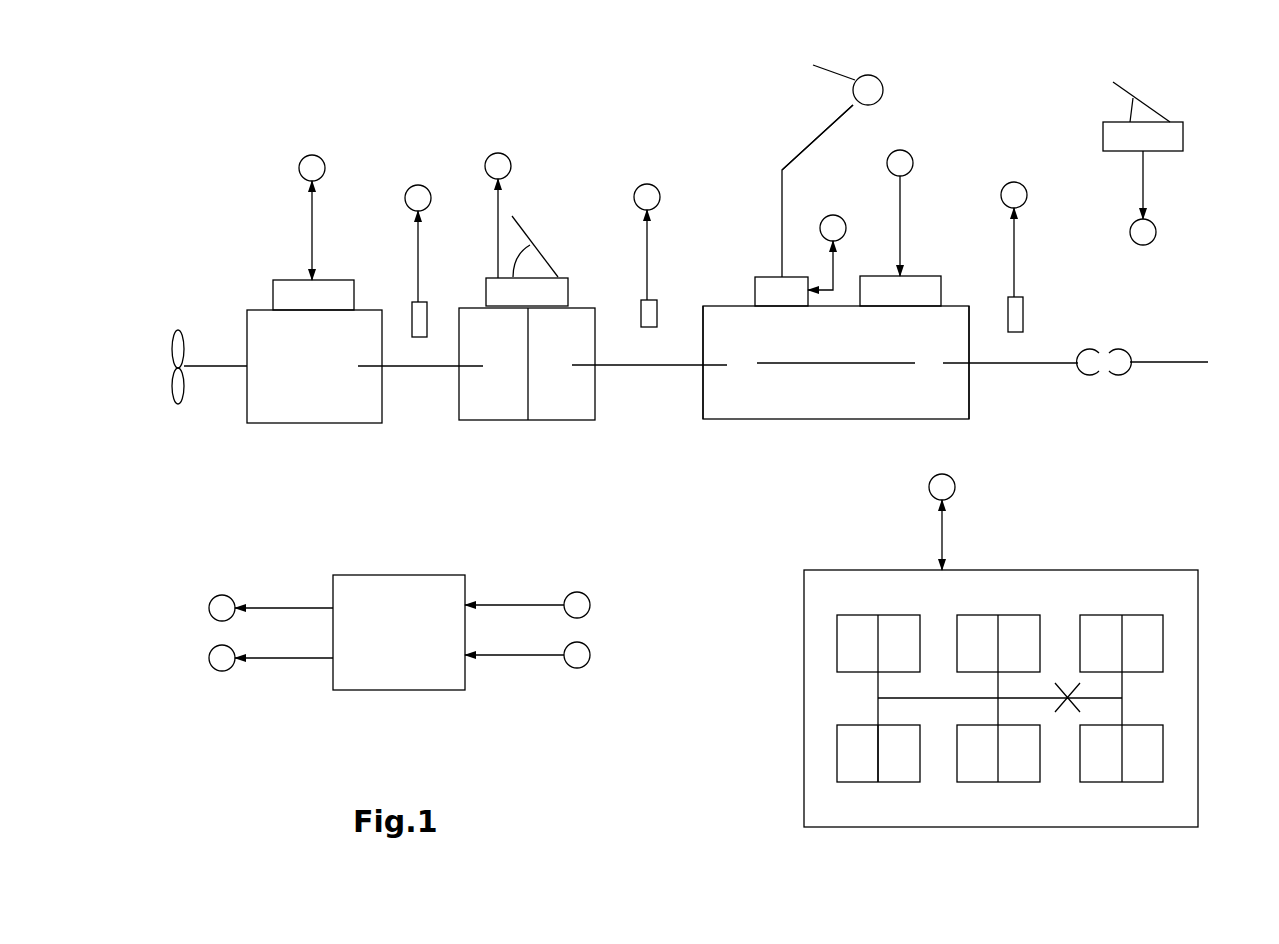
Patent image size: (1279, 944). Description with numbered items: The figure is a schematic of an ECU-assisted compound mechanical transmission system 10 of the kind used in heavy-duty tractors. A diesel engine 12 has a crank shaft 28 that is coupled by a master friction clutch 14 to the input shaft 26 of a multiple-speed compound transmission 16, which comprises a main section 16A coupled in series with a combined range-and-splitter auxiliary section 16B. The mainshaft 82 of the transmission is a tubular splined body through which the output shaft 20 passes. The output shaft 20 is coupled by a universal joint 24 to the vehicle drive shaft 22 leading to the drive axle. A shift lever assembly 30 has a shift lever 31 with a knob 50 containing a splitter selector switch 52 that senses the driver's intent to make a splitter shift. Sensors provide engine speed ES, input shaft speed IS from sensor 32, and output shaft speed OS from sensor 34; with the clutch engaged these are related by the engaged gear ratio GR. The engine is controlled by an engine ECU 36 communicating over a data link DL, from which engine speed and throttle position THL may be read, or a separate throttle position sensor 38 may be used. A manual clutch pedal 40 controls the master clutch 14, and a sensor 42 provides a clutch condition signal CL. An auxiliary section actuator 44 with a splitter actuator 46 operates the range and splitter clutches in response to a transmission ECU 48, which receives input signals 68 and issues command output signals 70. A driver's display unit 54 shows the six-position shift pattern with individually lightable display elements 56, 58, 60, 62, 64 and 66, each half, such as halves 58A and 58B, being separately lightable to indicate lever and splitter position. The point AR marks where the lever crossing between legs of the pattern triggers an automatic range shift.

The vehicular transmission system 10 is at (675, 142).
The diesel engine 12 is at (312, 387).
The master friction clutch 14 is at (512, 437).
The multiple-speed compound transmission 16 is at (852, 380).
The main section 16A is at (772, 402).
The auxiliary section 16B is at (950, 387).
The output shaft 20 is at (1048, 362).
The vehicle drive shaft 22 is at (1177, 362).
The universal joint 24 is at (1108, 343).
The input shaft 26 is at (640, 366).
The crank shaft 28 is at (417, 368).
The shift lever assembly 30 is at (805, 187).
The shift lever 31 is at (420, 318).
The input shaft speed sensor 32 is at (648, 313).
The output shaft speed sensor 34 is at (1008, 317).
The engine ECU 36 is at (278, 292).
The throttle position sensor 38 is at (1122, 142).
The manual clutch pedal 40 is at (513, 277).
The clutch sensor 42 is at (563, 290).
The auxiliary section actuator 44 is at (873, 290).
The splitter actuator 46 is at (912, 295).
The transmission ECU 48 is at (383, 667).
The knob 50 is at (872, 93).
The splitter selector switch 52 is at (833, 70).
The driver's display unit 54 is at (1123, 540).
The display element 56 is at (858, 615).
The display element 58 is at (888, 783).
The display element half 58A is at (860, 778).
The display element half 58B is at (905, 775).
The display element 60 is at (1020, 615).
The display element 62 is at (1017, 780).
The display element 64 is at (1140, 613).
The display element 66 is at (1123, 783).
The input signals 68 is at (523, 677).
The command output signals 70 is at (280, 675).
The mainshaft 82 is at (870, 365).
The data link DL is at (313, 227).
The engine rotational speed ES is at (417, 257).
The clutch condition signal CL is at (497, 228).
The input shaft rotational speed IS is at (648, 247).
The gear ratio GR is at (835, 272).
The output shaft rotational speed OS is at (1017, 257).
The throttle position THL is at (1145, 175).
The automatic range shift point AR is at (1067, 710).